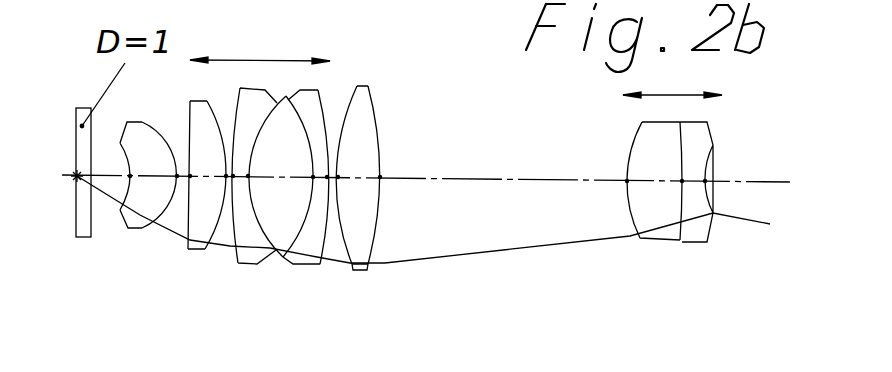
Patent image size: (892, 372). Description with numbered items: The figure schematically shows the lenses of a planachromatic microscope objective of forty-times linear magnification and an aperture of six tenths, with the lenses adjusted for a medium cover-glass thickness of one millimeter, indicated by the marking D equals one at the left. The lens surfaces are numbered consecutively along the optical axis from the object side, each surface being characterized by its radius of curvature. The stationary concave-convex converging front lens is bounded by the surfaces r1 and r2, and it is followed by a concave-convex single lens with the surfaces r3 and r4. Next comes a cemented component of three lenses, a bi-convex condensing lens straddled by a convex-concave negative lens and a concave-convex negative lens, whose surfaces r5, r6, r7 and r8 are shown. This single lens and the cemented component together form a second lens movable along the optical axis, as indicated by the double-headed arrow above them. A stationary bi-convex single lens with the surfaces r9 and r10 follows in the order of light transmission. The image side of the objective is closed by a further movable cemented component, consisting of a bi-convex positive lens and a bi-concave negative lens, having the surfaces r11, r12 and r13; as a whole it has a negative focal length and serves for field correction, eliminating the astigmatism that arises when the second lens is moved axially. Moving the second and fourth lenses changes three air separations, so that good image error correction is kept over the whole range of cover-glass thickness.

The radius of curvature of lens surface r1 is at (130, 176).
The radius of curvature of lens surface r2 is at (177, 176).
The radius of curvature of lens surface r3 is at (190, 176).
The radius of curvature of lens surface r4 is at (226, 176).
The radius of curvature of lens surface r5 is at (235, 176).
The radius of curvature of lens surface r6 is at (248, 177).
The radius of curvature of lens surface r7 is at (313, 177).
The radius of curvature of lens surface r8 is at (327, 177).
The radius of curvature of lens surface r9 is at (338, 177).
The radius of curvature of lens surface r10 is at (380, 177).
The radius of curvature of lens surface r11 is at (627, 181).
The radius of curvature of lens surface r12 is at (682, 181).
The radius of curvature of lens surface r13 is at (713, 213).